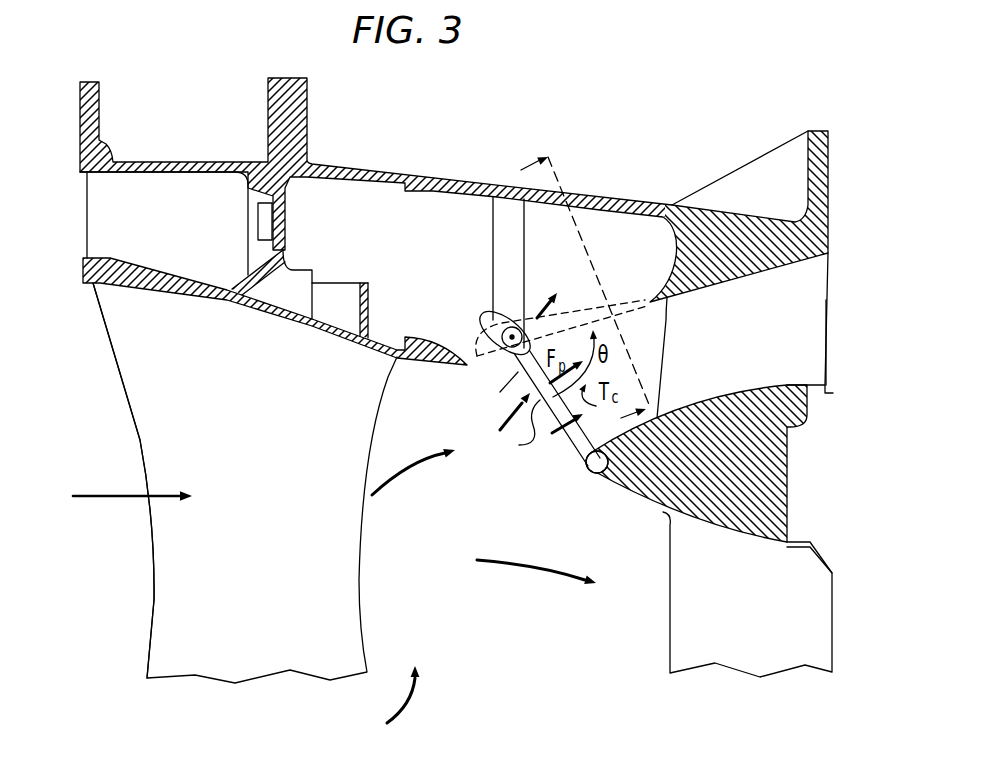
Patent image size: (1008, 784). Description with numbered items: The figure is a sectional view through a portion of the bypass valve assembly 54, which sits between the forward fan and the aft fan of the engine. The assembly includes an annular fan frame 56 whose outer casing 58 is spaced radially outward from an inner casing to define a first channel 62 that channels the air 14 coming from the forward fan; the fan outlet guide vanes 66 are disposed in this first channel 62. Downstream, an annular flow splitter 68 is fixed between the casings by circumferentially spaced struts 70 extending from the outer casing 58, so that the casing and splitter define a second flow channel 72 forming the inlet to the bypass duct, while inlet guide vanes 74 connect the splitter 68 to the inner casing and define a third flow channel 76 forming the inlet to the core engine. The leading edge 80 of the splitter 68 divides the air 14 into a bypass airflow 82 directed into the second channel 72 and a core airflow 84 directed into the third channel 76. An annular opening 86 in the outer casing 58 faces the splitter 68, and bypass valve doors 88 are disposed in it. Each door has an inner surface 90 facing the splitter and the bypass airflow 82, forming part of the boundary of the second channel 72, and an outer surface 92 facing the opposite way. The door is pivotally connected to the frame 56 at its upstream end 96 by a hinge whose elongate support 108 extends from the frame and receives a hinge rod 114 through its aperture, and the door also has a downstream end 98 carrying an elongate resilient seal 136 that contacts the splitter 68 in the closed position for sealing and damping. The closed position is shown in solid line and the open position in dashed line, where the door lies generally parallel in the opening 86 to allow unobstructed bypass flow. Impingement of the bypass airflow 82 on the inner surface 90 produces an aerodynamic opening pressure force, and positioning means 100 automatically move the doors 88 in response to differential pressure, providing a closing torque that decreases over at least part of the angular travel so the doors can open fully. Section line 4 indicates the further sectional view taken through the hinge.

The section line 4- 4 is at (578, 295).
The air 14 is at (112, 494).
The bypass valve assembly 54 is at (386, 705).
The annular fan frame 56 is at (389, 169).
The outer casing 58 is at (423, 338).
The first channel 62 is at (239, 578).
The fan outlet guide vanes 66 is at (152, 588).
The annular flow splitter 68 is at (627, 496).
The struts 70 is at (827, 303).
The second flow channel 72 is at (697, 377).
The inlet guide vanes 74 is at (810, 546).
The third flow channel 76 is at (740, 632).
The leading edge 80 is at (586, 467).
The bypass airflow 82 is at (395, 478).
The core airflow 84 is at (508, 565).
The annular opening 86 is at (475, 360).
The bypass valve doors 88 is at (501, 420).
The inner surface 90 is at (518, 434).
The outer surface 92 is at (498, 395).
The upstream end 96 is at (487, 314).
The downstream end 98 is at (572, 442).
The positioning means 100 is at (553, 364).
The elongate support 108 is at (493, 236).
The hinge rod 114 is at (513, 335).
The resilient seal 136 is at (592, 479).